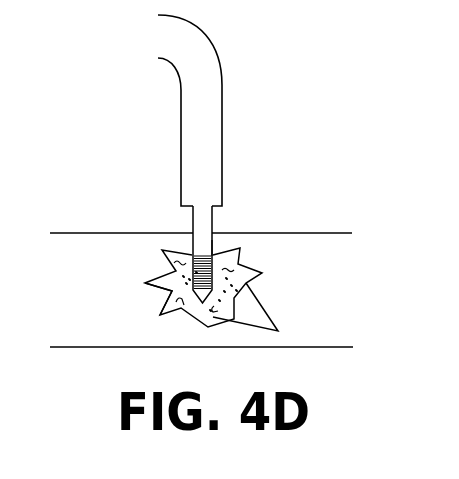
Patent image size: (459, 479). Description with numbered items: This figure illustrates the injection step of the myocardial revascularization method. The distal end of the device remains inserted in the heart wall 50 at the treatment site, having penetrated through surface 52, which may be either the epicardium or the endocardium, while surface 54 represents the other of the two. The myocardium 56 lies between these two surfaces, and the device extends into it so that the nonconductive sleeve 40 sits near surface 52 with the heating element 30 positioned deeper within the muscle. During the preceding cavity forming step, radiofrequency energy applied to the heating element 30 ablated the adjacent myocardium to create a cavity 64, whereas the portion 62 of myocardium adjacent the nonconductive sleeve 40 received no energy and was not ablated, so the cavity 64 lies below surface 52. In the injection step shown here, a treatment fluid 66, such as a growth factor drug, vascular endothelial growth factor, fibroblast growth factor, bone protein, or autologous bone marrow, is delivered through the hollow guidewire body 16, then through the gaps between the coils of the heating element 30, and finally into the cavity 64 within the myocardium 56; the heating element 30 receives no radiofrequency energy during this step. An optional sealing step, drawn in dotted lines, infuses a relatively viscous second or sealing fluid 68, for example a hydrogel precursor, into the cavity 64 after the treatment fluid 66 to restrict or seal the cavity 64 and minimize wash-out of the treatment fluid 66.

The hollow guidewire body 16 is at (202, 145).
The heating element 30 is at (176, 268).
The nonconductive sleeve 40 is at (198, 243).
The heart wall 50 is at (92, 215).
The surface 52 is at (320, 233).
The surface 54 is at (332, 347).
The myocardium 56 is at (89, 294).
The portion of myocardium 62 is at (218, 245).
The cavity 64 is at (170, 294).
The treatment fluid 66 is at (262, 315).
The sealing fluid 68 is at (237, 265).